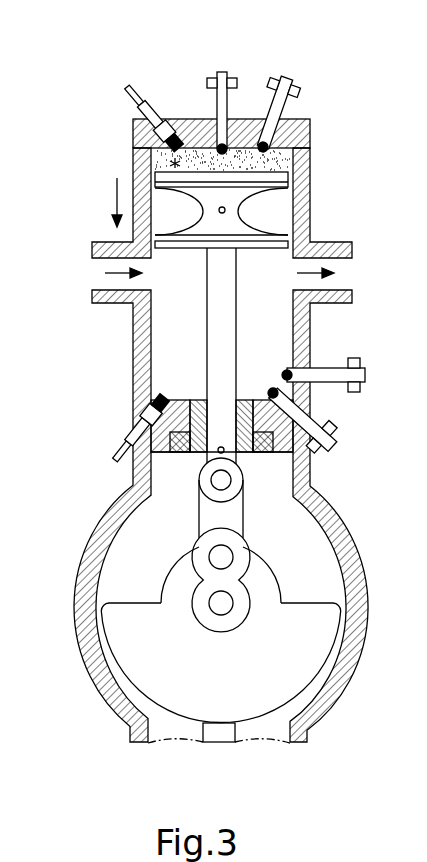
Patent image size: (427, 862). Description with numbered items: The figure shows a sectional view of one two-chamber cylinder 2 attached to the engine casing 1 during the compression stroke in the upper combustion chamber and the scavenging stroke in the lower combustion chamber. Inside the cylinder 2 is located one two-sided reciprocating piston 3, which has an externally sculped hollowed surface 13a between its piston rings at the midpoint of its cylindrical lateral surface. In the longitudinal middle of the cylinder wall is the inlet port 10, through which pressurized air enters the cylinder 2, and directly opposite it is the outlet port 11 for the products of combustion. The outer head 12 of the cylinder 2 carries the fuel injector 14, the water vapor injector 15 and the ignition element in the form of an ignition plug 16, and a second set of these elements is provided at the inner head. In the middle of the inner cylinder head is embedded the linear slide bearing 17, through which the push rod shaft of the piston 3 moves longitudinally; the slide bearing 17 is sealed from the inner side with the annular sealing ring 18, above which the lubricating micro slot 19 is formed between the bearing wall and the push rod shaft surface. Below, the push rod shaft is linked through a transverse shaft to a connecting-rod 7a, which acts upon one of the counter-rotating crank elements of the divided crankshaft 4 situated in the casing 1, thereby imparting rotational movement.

The casing 1 is at (87, 640).
The two-chamber cylinder 2 is at (307, 119).
The two-sided reciprocating piston 3 is at (210, 200).
The divided crankshaft 4 is at (185, 622).
The connecting-rod 7a is at (220, 503).
The inlet port 10 is at (110, 279).
The outlet port 11 is at (335, 280).
The outer head 12 is at (180, 125).
The piston cavity 13a is at (180, 207).
The fuel injector 14 is at (223, 73).
The water vapor injector 15 is at (283, 83).
The ignition plug 16 is at (148, 110).
The linear slide bearing 17 is at (307, 453).
The annular sealing ring 18 is at (150, 462).
The lubricating micro slot 19 is at (207, 398).